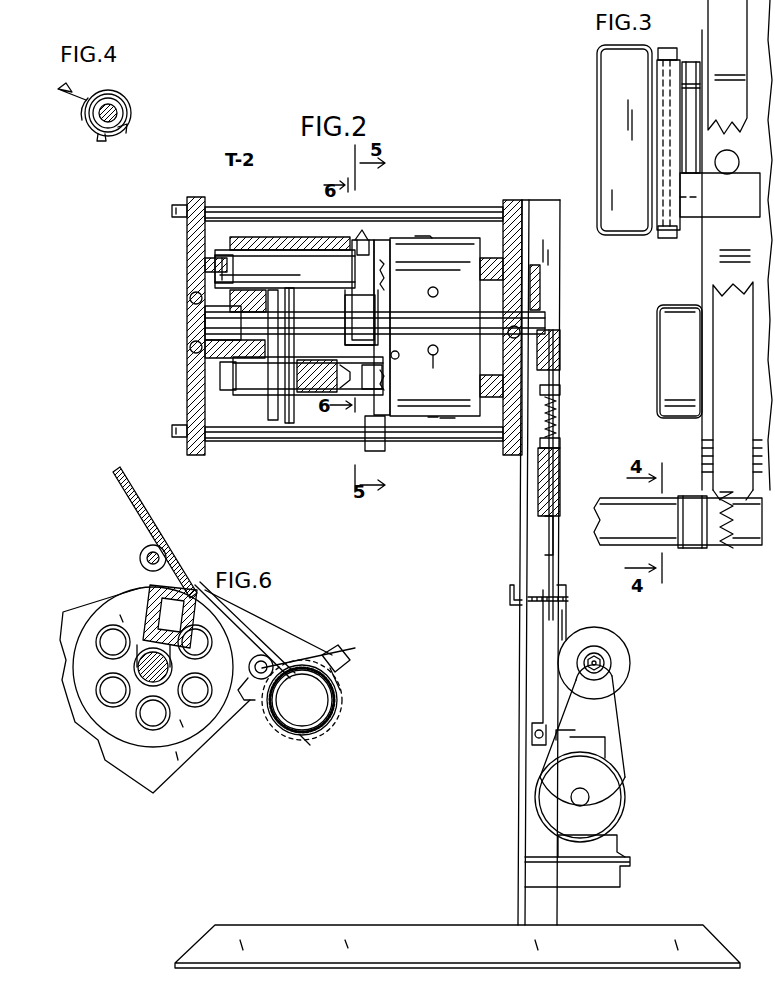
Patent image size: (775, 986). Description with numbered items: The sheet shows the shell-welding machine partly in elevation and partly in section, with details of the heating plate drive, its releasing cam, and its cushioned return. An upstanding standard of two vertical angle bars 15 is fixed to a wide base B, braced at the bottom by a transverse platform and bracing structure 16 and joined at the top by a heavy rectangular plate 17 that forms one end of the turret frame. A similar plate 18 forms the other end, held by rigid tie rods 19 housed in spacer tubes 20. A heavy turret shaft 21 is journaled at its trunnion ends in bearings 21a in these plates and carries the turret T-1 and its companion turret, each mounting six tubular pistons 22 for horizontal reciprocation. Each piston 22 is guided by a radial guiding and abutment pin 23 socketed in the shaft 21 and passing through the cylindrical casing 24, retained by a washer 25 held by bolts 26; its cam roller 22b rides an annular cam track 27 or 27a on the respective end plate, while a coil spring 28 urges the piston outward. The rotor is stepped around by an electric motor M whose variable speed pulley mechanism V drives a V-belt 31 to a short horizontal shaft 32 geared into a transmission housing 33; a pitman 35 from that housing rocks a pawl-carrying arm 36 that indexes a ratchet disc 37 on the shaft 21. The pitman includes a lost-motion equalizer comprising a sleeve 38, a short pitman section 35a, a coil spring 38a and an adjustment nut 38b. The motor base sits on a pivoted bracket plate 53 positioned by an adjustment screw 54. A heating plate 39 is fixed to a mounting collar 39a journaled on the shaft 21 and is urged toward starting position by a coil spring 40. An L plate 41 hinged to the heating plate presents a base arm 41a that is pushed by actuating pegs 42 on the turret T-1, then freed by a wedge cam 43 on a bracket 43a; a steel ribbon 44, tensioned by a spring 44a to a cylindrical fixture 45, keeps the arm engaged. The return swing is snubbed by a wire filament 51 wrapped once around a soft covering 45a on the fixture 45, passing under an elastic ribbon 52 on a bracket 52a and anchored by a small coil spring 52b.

In FIG. 2, the angle bars 15 is at (522, 498).
In FIG. 2, the transverse platform and bracing structure 16 is at (622, 868).
In FIG. 2, the rectangular metal plate 17 is at (505, 210).
In FIG. 2, the metal plate 18 is at (188, 370).
In FIG. 6, the metal plate 18 is at (248, 700).
In FIG. 4, the tie rods 19 is at (120, 116).
In FIG. 2, the tie rods 19 is at (172, 211).
In FIG. 6, the tie rods 19 is at (146, 558).
In FIG. 4, the spacer tubes 20 is at (123, 130).
In FIG. 2, the spacer tubes 20 is at (236, 208).
In FIG. 3, the spacer tubes 20 is at (604, 526).
In FIG. 6, the spacer tubes 20 is at (146, 552).
In FIG. 2, the turret shaft 21 is at (240, 320).
In FIG. 6, the turret shaft 21 is at (138, 680).
In FIG. 2, the bearings 21a is at (192, 300).
In FIG. 2, the pistons 22 is at (300, 262).
In FIG. 3, the pistons 22 is at (690, 70).
In FIG. 6, the pistons 22 is at (138, 718).
In FIG. 2, the cam roller 22b is at (216, 266).
In FIG. 2, the guiding and abutment pin 23 is at (288, 400).
In FIG. 2, the cylindrical casings 24 is at (285, 240).
In FIG. 2, the washers 25 is at (449, 368).
In FIG. 2, the bolts 26 is at (438, 349).
In FIG. 2, the annular cam track 27 is at (512, 268).
In FIG. 2, the annular cam track 27a is at (205, 264).
In FIG. 2, the coil springs 28 is at (235, 398).
In FIG. 2, the V-belt 31 is at (624, 742).
In FIG. 2, the horizontal shaft 32 is at (588, 800).
In FIG. 2, the transmission housing 33 is at (604, 746).
In FIG. 2, the pitman 35 is at (553, 574).
In FIG. 2, the short pitman section 35a is at (558, 416).
In FIG. 2, the pawl-carrying arm 36 is at (547, 356).
In FIG. 2, the ratchet disc 37 is at (536, 290).
In FIG. 2, the sleeve 38 is at (553, 500).
In FIG. 2, the coil spring 38a is at (558, 442).
In FIG. 2, the adjustment nut 38b is at (556, 395).
In FIG. 2, the heating plate 39 is at (362, 235).
In FIG. 3, the heating plate 39 is at (612, 136).
In FIG. 6, the heating plate 39 is at (146, 612).
In FIG. 2, the mounting collar 39a is at (376, 320).
In FIG. 6, the mounting collar 39a is at (138, 665).
In FIG. 2, the coil spring 40 is at (352, 242).
In FIG. 6, the coil spring 40 is at (158, 525).
In FIG. 2, the L plate 41 is at (382, 244).
In FIG. 3, the L plate 41 is at (686, 232).
In FIG. 3, the base arm 41a is at (732, 207).
In FIG. 2, the actuating pegs 42 is at (401, 350).
In FIG. 3, the actuating pegs 42 is at (740, 160).
In FIG. 4, the wedge cam 43 is at (73, 100).
In FIG. 6, the wedge cam 43 is at (248, 667).
In FIG. 4, the bracket 43a is at (96, 130).
In FIG. 2, the bracket 43a is at (380, 450).
In FIG. 3, the bracket 43a is at (694, 548).
In FIG. 6, the bracket 43a is at (302, 700).
In FIG. 2, the steel ribbon 44 is at (433, 290).
In FIG. 3, the steel ribbon 44 is at (720, 350).
In FIG. 6, the steel ribbon 44 is at (275, 648).
In FIG. 6, the spring 44a is at (292, 660).
In FIG. 6, the cylindrical fixture 45 is at (338, 702).
In FIG. 6, the soft covering 45a is at (330, 724).
In FIG. 6, the wire filament 51 is at (340, 652).
In FIG. 6, the elastic ribbon 52 is at (345, 658).
In FIG. 6, the bracket 52a is at (342, 680).
In FIG. 6, the coil spring 52b is at (305, 745).
In FIG. 2, the bracket plate 53 is at (560, 618).
In FIG. 2, the adjustment screw 54 is at (570, 599).
In FIG. 2, the base B is at (296, 931).
In FIG. 2, the electric motor M is at (632, 666).
In FIG. 2, the variable speed pulley mechanism V is at (602, 660).
In FIG. 2, the turret T-1 is at (432, 250).
In FIG. 6, the turret T-1 is at (117, 741).